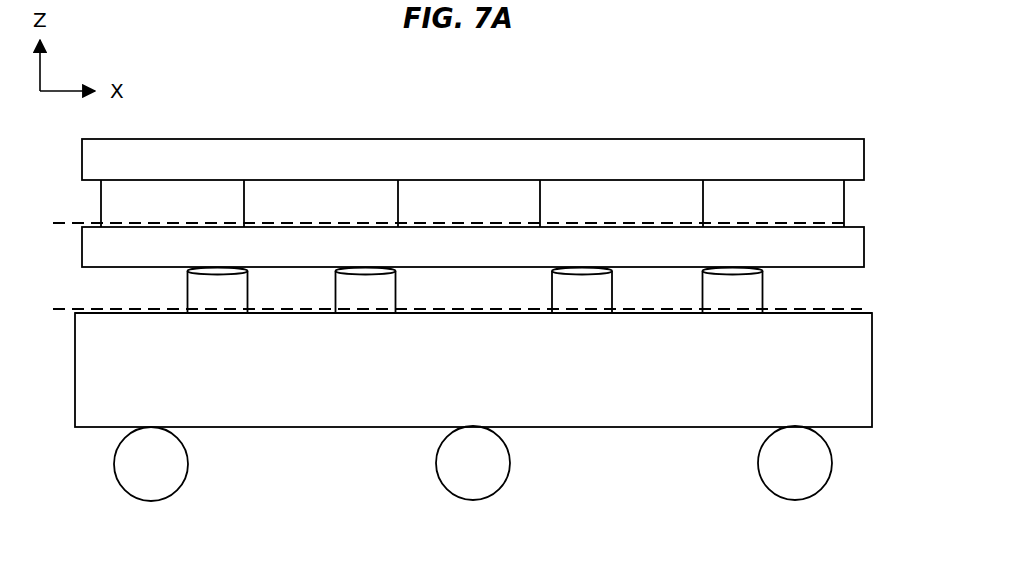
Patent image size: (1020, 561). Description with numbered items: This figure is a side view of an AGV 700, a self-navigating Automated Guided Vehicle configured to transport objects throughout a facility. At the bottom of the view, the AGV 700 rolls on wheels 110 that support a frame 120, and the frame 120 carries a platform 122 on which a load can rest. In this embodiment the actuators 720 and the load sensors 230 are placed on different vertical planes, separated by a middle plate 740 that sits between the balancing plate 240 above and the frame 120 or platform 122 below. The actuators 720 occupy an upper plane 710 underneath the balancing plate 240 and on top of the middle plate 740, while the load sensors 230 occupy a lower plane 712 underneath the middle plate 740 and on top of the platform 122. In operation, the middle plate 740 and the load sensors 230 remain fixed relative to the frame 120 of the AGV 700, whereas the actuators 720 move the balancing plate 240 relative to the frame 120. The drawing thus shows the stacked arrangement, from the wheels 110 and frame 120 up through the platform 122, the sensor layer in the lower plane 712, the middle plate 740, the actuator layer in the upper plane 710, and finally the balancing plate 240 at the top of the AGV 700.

The AGV 700 is at (274, 85).
The balancing plate 240 is at (578, 171).
The actuators 720 is at (192, 213).
The upper plane 710 is at (77, 210).
The middle plate 740 is at (561, 258).
The load sensors 230 is at (236, 303).
The lower plane 712 is at (77, 297).
The platform 122 is at (864, 313).
The frame 120 is at (852, 367).
The wheels 110 is at (183, 479).